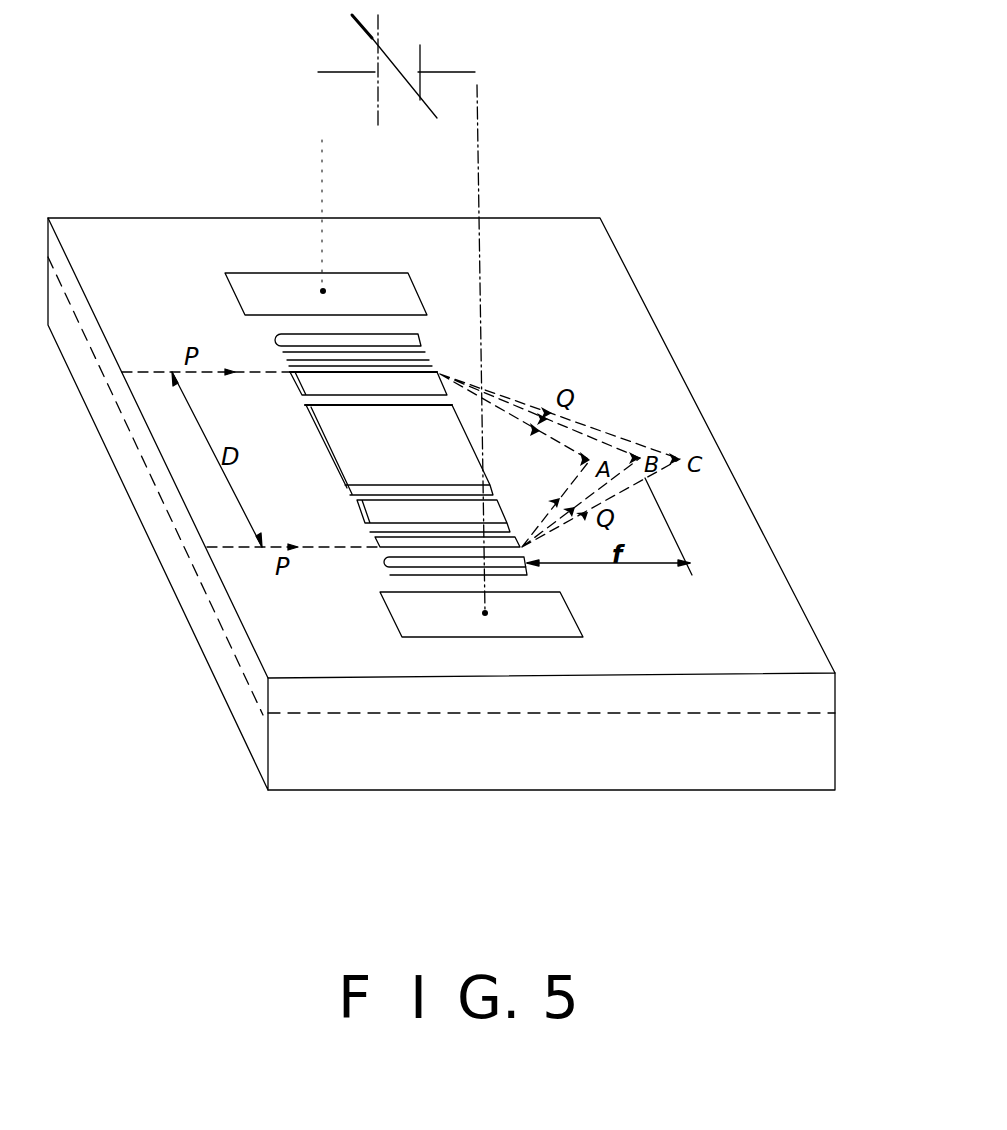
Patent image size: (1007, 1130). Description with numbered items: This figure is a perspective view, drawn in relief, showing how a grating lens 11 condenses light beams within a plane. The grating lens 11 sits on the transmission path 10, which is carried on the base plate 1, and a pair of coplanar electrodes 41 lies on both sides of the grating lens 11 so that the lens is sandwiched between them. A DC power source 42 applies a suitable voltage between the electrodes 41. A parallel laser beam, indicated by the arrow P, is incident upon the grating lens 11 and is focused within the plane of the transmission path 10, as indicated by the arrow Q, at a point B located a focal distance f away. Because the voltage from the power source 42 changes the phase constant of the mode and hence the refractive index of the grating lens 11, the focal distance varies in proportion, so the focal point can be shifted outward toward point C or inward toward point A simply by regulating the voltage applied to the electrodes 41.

The base plate 1 is at (825, 758).
The transmission path 10 is at (823, 699).
The grating lens 11 is at (343, 451).
The electrodes 41 is at (408, 291).
The DC power source 42 is at (420, 60).